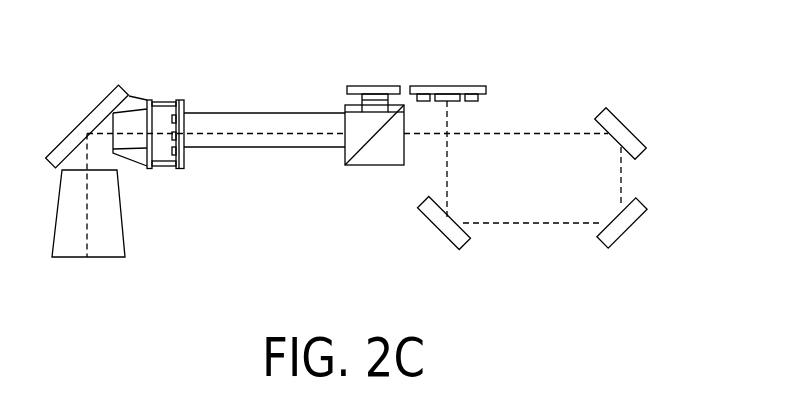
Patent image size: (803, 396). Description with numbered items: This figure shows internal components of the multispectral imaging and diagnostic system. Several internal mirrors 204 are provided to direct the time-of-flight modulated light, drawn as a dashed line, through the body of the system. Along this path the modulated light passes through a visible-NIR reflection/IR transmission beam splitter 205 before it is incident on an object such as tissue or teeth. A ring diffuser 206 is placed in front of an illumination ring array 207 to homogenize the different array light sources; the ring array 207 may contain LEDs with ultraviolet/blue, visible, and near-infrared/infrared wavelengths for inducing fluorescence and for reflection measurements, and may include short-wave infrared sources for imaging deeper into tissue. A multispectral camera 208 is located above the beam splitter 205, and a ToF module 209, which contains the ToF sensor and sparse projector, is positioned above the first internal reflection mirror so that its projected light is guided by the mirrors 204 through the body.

The internal mirrors 204 is at (63, 137).
The visible-NIR reflection/IR transmission beam splitter 205 is at (378, 166).
The ring diffuser 206 is at (150, 100).
The illumination ring array 207 is at (186, 164).
The multispectral camera 208 is at (350, 86).
The ToF module 209 is at (447, 85).